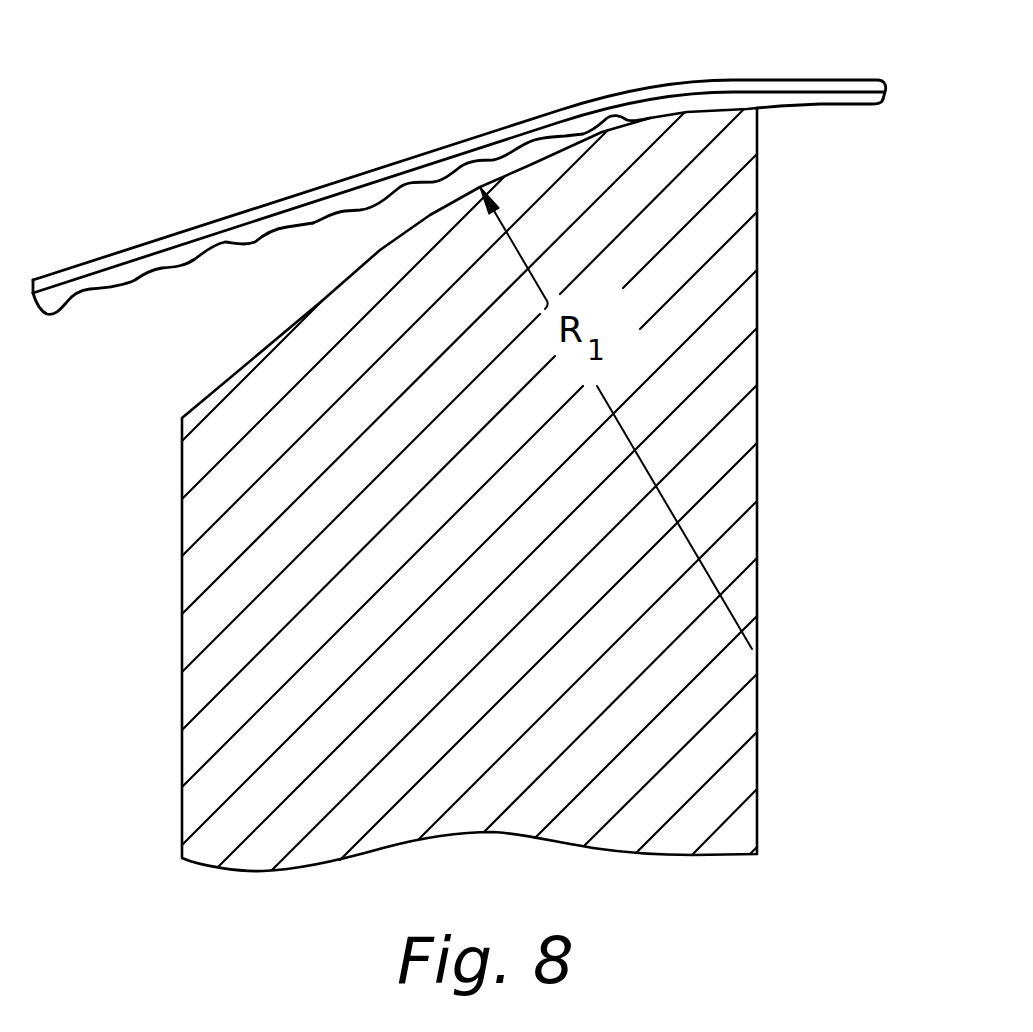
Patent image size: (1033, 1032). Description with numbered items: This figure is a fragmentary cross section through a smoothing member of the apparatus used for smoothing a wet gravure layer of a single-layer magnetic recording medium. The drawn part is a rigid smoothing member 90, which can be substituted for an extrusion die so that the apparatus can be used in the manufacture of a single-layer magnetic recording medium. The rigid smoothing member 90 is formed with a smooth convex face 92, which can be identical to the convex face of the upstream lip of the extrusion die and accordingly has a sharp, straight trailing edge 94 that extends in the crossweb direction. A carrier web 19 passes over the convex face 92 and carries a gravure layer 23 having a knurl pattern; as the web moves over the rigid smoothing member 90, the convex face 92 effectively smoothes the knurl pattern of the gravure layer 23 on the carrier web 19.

The carrier web 19 is at (428, 150).
The gravure layer 23 is at (180, 262).
The rigid smoothing member 90 is at (181, 533).
The smooth convex face 92 is at (550, 146).
The sharp, straight trailing edge 94 is at (757, 107).